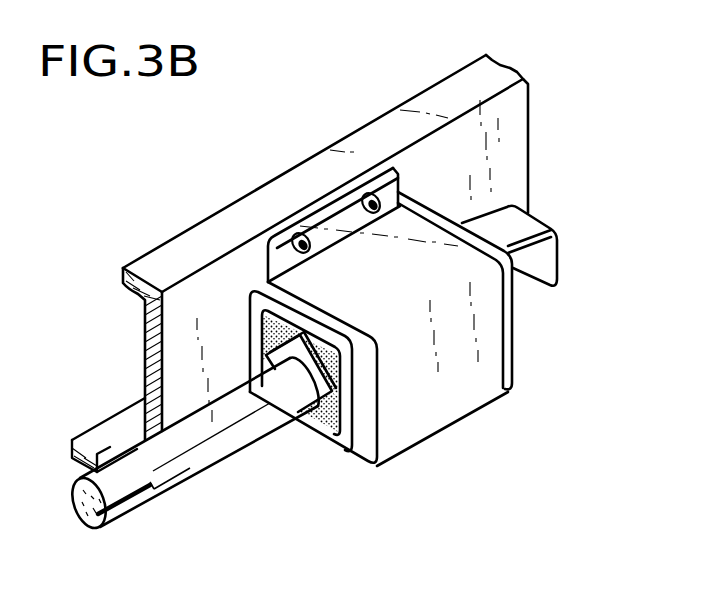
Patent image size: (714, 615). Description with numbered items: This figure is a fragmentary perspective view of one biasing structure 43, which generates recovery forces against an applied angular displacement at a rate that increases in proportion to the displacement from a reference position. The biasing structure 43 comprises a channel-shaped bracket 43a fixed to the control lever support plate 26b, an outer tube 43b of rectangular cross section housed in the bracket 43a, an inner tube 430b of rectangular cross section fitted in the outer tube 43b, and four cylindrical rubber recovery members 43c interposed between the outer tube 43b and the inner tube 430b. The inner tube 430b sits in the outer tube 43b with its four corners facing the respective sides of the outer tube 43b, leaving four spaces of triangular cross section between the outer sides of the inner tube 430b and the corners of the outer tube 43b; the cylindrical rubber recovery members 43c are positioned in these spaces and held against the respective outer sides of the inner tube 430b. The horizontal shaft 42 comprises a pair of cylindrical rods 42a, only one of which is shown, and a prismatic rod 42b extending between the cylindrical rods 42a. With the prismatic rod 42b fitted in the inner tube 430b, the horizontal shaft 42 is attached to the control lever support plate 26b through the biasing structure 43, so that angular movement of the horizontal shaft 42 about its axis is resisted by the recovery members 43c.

The control lever support plate 26b is at (448, 73).
The biasing structure 43 is at (470, 427).
The channel-shaped bracket 43a is at (492, 354).
The outer tube 43b is at (463, 222).
The cylindrical rubber recovery members 43c is at (326, 345).
The inner tube 430b is at (300, 404).
The horizontal shaft 42 is at (212, 465).
The cylindrical rods 42a is at (197, 457).
The prismatic rod 42b is at (316, 428).